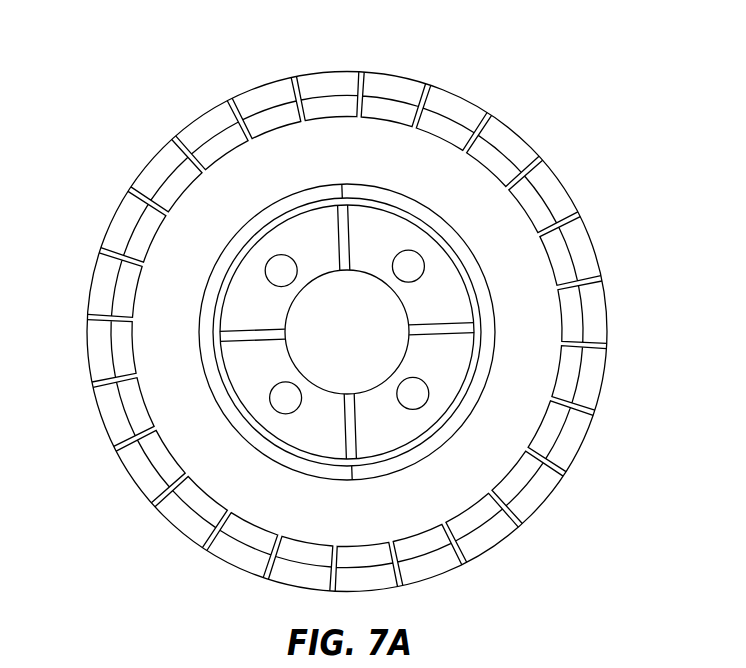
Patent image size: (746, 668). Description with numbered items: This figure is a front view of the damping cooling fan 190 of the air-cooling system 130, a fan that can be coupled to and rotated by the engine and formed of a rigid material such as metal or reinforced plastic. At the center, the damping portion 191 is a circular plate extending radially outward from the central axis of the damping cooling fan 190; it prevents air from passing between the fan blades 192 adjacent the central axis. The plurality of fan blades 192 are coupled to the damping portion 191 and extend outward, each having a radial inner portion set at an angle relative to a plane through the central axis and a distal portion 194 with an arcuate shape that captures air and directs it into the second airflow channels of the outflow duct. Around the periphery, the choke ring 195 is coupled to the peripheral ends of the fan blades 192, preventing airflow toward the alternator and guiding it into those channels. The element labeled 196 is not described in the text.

The air-cooling system 130 is at (162, 523).
The damping cooling fan 190 is at (335, 80).
The damping portion 191 is at (513, 222).
The fan blades 192 is at (572, 227).
The distal portion 194 is at (600, 278).
The choke ring 195 is at (187, 125).
The ring segment 196 is at (272, 120).